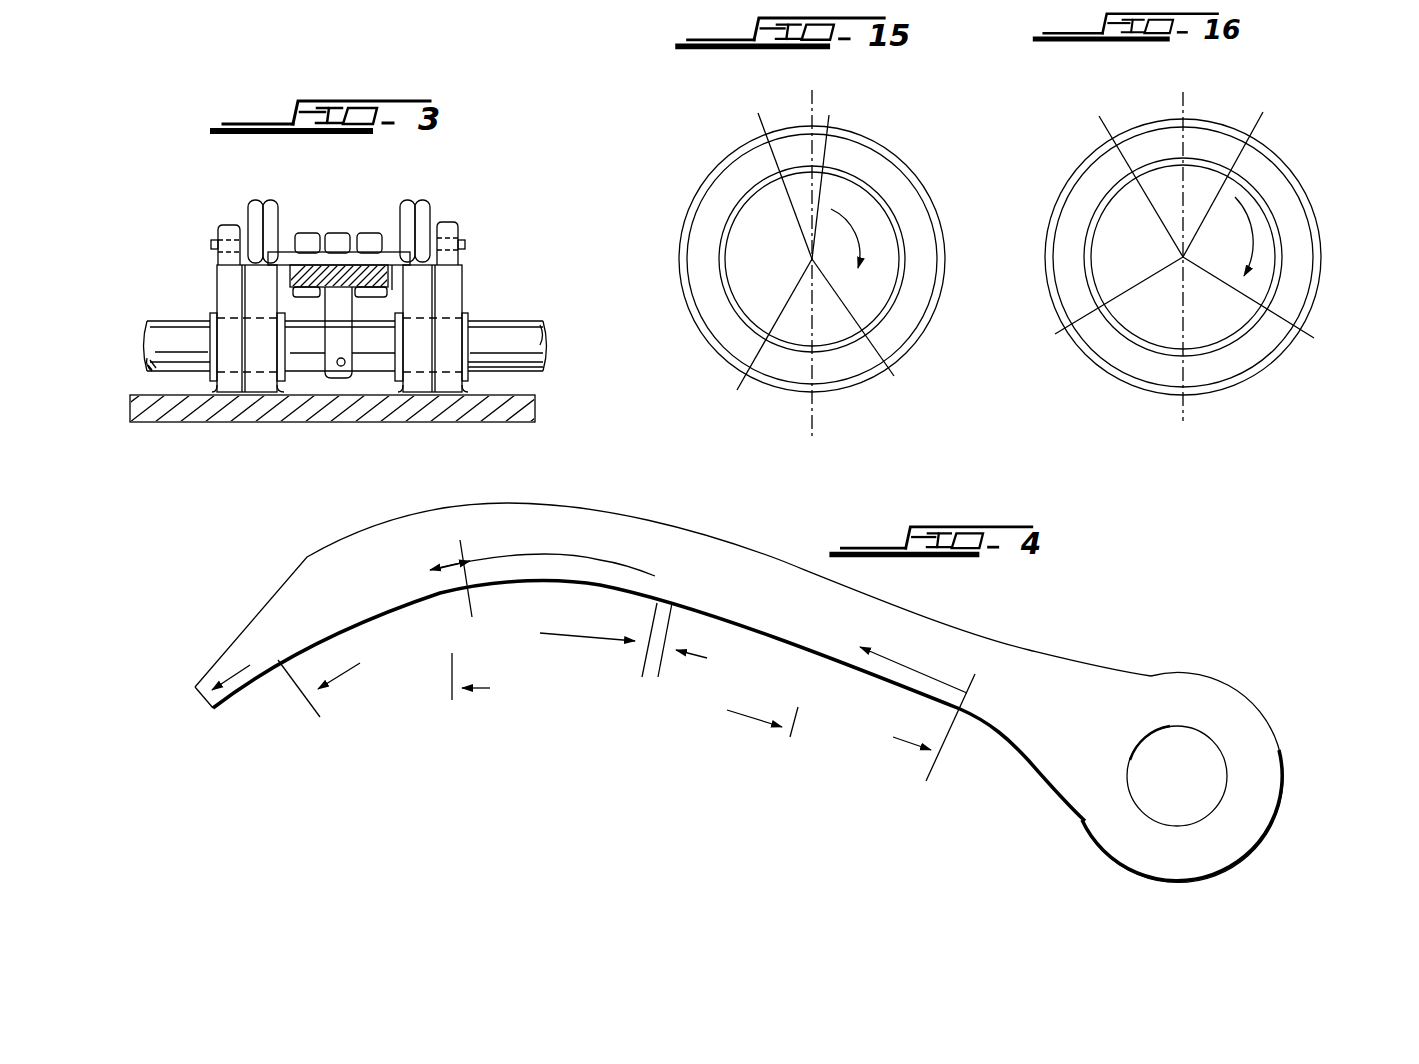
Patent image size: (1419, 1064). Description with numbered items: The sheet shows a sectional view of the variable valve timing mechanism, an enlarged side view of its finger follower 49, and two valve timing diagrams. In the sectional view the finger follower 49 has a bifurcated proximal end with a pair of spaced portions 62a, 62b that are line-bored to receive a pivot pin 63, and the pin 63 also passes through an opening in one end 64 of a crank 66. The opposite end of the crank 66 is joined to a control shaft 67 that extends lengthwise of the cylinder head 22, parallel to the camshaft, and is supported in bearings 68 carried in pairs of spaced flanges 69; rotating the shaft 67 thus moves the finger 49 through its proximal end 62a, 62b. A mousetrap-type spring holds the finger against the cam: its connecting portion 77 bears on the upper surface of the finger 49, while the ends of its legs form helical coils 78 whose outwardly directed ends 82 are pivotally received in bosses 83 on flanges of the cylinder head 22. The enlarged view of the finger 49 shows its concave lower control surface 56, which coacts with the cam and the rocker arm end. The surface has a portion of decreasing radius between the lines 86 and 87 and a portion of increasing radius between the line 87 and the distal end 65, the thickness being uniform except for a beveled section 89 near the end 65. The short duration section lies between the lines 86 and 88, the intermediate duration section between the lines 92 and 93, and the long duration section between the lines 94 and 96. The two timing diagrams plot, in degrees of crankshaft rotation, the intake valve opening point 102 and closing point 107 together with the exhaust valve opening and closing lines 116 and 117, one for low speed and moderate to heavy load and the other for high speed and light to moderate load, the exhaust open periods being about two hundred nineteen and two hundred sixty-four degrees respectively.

In FIG. 3, the cylinder head 22 is at (540, 399).
In FIG. 3, the finger follower 49 is at (332, 291).
In FIG. 4, the finger follower 49 is at (512, 503).
In FIG. 4, the concave control surface 56 is at (553, 583).
In FIG. 3, the spaced portion of bifurcated proximal end 62a is at (370, 232).
In FIG. 4, the spaced portion of bifurcated proximal end 62a is at (1276, 729).
In FIG. 3, the spaced portion of bifurcated proximal end 62b is at (303, 232).
In FIG. 4, the spaced portion of bifurcated proximal end 62b is at (1177, 776).
In FIG. 3, the pivot pin 63 is at (382, 291).
In FIG. 3, the crank end 64 is at (337, 232).
In FIG. 4, the distal end 65 is at (205, 703).
In FIG. 3, the crank 66 is at (348, 349).
In FIG. 3, the control shaft 67 is at (524, 322).
In FIG. 3, the bearings 68 is at (211, 377).
In FIG. 3, the spaced flanges 69 is at (223, 282).
In FIG. 3, the connecting portion 77 is at (393, 260).
In FIG. 3, the helical coils 78 is at (256, 205).
In FIG. 3, the outwardly directed ends 82 is at (212, 246).
In FIG. 3, the bosses 83 is at (235, 225).
In FIG. 4, the line 86 is at (967, 693).
In FIG. 4, the line 87 is at (465, 552).
In FIG. 4, the line 88 is at (668, 623).
In FIG. 4, the beveled section 89 is at (262, 607).
In FIG. 4, the line 92 is at (797, 725).
In FIG. 4, the line 93 is at (452, 681).
In FIG. 4, the line 94 is at (652, 617).
In FIG. 4, the line 96 is at (288, 672).
In FIG. 15, the opening ramp point 102 is at (762, 116).
In FIG. 16, the opening ramp point 102 is at (1106, 120).
In FIG. 15, the closing ramp point 107 is at (738, 385).
In FIG. 16, the closing ramp point 107 is at (1054, 322).
In FIG. 15, the exhaust opening line 116 is at (895, 376).
In FIG. 16, the exhaust opening line 116 is at (1308, 344).
In FIG. 15, the exhaust closing line 117 is at (828, 112).
In FIG. 16, the exhaust closing line 117 is at (1261, 118).